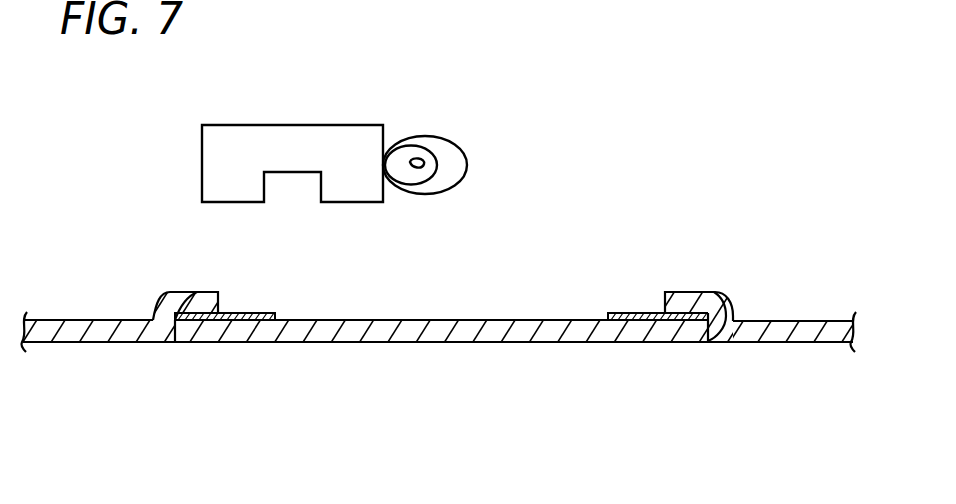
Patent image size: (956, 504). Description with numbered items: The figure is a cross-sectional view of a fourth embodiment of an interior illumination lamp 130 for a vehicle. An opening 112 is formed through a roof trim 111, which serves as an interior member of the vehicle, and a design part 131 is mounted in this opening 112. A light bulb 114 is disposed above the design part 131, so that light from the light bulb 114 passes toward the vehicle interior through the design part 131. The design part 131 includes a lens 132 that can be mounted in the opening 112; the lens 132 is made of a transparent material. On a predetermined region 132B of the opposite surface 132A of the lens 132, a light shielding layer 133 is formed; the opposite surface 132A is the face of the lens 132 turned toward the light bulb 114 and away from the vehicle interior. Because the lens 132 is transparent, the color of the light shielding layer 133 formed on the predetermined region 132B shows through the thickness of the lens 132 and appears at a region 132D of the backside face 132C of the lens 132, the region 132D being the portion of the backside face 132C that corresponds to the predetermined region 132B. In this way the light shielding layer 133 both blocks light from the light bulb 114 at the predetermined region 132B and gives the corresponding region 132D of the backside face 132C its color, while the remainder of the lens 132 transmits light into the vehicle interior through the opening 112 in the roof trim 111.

The roof trim 111 is at (817, 343).
The opening 112 is at (708, 343).
The light bulb 114 is at (416, 137).
The interior illumination lamp 130 is at (562, 224).
The design part 131 is at (588, 315).
The lens 132 is at (391, 334).
The opposite surface 132A is at (470, 320).
The predetermined region 132B is at (196, 308).
The backside face 132C is at (360, 343).
The region of backside face 132D is at (193, 342).
The light shielding layer 133 is at (258, 313).